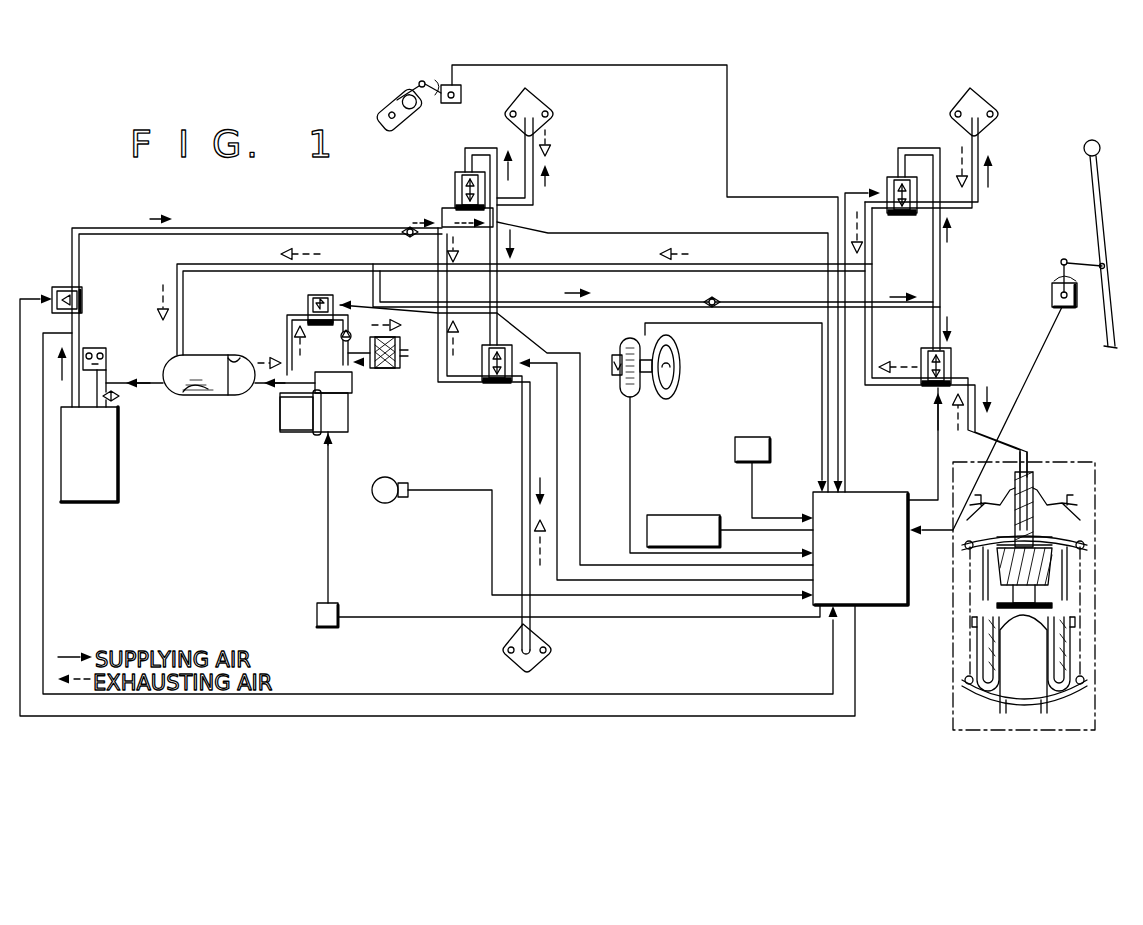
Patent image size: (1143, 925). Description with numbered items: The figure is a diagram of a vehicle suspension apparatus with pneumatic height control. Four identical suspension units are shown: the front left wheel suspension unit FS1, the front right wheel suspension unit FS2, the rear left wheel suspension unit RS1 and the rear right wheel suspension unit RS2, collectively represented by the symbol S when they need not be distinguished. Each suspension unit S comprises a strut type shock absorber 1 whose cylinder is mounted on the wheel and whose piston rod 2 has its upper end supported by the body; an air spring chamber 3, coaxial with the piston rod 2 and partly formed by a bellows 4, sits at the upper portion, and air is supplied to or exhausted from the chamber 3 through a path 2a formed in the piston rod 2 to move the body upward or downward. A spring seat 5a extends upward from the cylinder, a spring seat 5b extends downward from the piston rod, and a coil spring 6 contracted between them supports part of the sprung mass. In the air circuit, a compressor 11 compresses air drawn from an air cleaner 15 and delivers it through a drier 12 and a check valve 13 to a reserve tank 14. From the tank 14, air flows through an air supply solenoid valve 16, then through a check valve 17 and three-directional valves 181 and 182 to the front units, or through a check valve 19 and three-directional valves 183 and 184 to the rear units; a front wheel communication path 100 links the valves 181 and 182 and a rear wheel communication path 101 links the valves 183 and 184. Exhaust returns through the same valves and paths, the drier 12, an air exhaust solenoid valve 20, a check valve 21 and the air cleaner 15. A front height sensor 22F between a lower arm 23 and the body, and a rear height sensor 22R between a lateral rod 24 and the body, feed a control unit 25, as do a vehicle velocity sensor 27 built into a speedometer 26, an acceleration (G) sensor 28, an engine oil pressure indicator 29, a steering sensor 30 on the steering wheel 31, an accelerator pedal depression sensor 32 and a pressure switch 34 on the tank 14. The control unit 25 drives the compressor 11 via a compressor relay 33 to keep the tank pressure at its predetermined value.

The strut type shock absorber 1 is at (1000, 705).
The piston rod 2 is at (1052, 585).
The path 2a is at (1033, 477).
The air spring chamber 3 is at (1052, 608).
The bellows 4 is at (1074, 648).
The spring seat 5a is at (1050, 700).
The spring seat 5b is at (1085, 533).
The coil spring 6 is at (1084, 565).
The compressor 11 is at (352, 421).
The drier 12 is at (215, 397).
The check valve 13 is at (118, 399).
The reserve tank 14 is at (118, 454).
The air cleaner 15 is at (386, 369).
The air supply solenoid valve 16 is at (55, 287).
The check valve 17 is at (406, 230).
The check valve 19 is at (717, 299).
The air exhaust solenoid valve 20 is at (308, 305).
The check valve 21 is at (339, 337).
The front height sensor 22F is at (466, 95).
The rear height sensor 22R is at (1052, 302).
The lower arm 23 is at (400, 128).
The lateral rod 24 is at (1087, 207).
The control unit 25 is at (856, 492).
The speedometer 26 is at (627, 341).
The vehicle velocity sensor 27 is at (620, 384).
The acceleration (G) sensor 28 is at (752, 437).
The indicator (OIL) 29 is at (674, 515).
The steering sensor 30 is at (646, 400).
The steering wheel 31 is at (677, 344).
The accelerator pedal depression sensor 32 is at (390, 478).
The compressor relay 33 is at (338, 609).
The pressure switch 34 is at (95, 348).
The front wheel communication path 100 is at (497, 283).
The rear wheel communication path 101 is at (938, 271).
The three-directional valve 181 is at (495, 385).
The three-directional valve 182 is at (456, 172).
The three-directional valve 183 is at (950, 367).
The three-directional valve 184 is at (887, 179).
The front left wheel suspension unit FS1 is at (546, 661).
The front right wheel suspension unit FS2 is at (553, 100).
The rear left wheel suspension unit RS1 is at (1048, 462).
The rear right wheel suspension unit RS2 is at (999, 100).
The suspension unit S is at (513, 101).